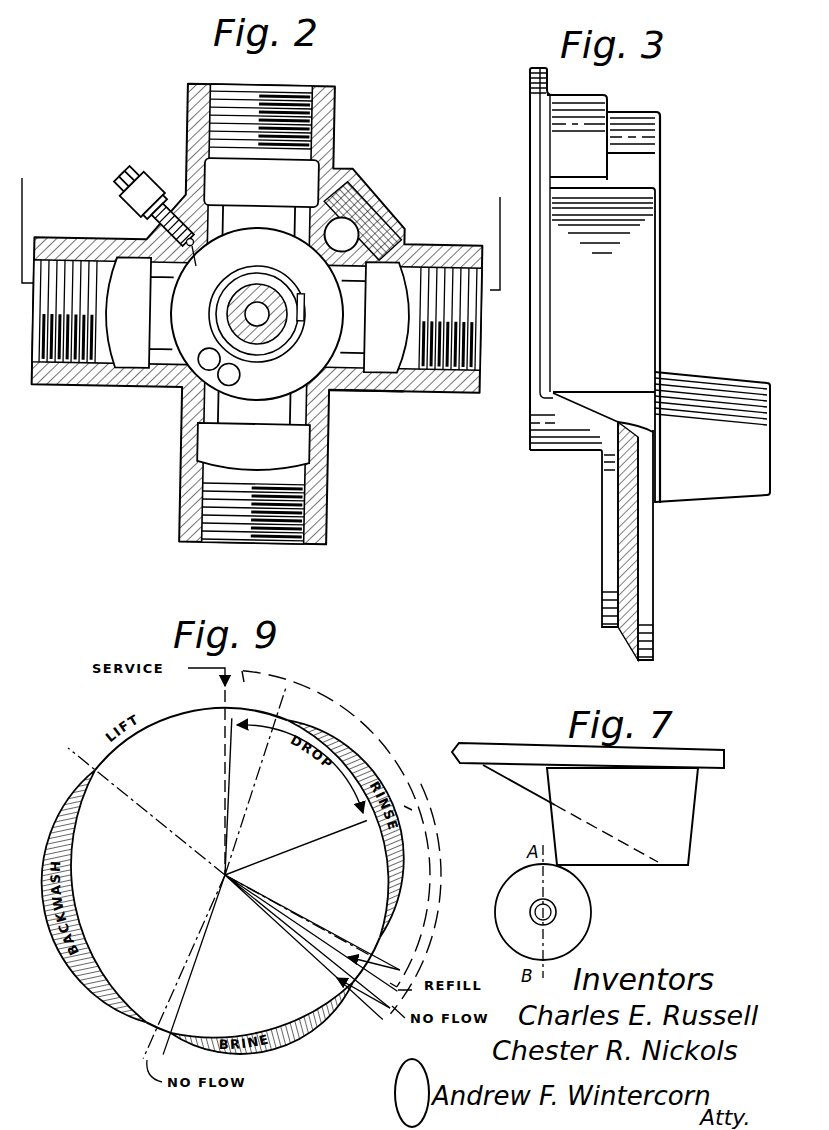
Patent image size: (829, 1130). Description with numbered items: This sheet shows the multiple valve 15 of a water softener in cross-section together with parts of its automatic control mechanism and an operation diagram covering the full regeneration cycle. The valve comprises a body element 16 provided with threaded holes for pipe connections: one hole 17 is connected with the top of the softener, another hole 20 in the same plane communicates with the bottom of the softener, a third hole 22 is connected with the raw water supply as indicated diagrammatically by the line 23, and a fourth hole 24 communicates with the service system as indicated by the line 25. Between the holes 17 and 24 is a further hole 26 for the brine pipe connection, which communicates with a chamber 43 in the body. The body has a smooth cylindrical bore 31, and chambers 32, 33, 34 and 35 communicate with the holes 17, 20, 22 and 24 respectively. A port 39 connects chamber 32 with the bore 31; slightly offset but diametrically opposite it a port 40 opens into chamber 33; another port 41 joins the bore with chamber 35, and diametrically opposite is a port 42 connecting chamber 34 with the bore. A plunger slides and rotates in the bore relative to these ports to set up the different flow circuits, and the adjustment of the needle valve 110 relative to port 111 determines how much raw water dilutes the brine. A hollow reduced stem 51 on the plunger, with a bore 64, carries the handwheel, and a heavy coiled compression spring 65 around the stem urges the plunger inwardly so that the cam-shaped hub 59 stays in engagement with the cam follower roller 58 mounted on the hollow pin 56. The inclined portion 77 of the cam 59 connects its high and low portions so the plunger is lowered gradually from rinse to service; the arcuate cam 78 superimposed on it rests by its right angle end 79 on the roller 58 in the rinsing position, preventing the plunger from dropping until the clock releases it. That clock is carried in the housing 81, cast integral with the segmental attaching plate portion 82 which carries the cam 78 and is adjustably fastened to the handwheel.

In FIG. 2, the multiple valve 15 is at (171, 394).
In FIG. 2, the body element 16 is at (336, 398).
In FIG. 2, the threaded hole 17 is at (300, 87).
In FIG. 2, the threaded hole 20 is at (290, 548).
In FIG. 2, the third hole 22 is at (60, 334).
In FIG. 2, the raw water supply line 23 is at (22, 202).
In FIG. 2, the fourth hole 24 is at (480, 306).
In FIG. 2, the service system line 25 is at (500, 224).
In FIG. 2, the brine hole 26 is at (372, 198).
In FIG. 2, the cylindrical bore 31 is at (322, 400).
In FIG. 2, the chamber 32 is at (261, 182).
In FIG. 2, the chamber 33 is at (253, 447).
In FIG. 2, the chamber 34 is at (139, 312).
In FIG. 2, the chamber 35 is at (375, 317).
In FIG. 2, the port 39 is at (278, 210).
In FIG. 2, the port 40 is at (265, 420).
In FIG. 2, the port 41 is at (346, 342).
In FIG. 2, the port 42 is at (175, 297).
In FIG. 2, the brine chamber 43 is at (341, 234).
In FIG. 2, the hollow reduced stem 51 is at (266, 270).
In FIG. 7, the hollow pin 56 is at (528, 907).
In FIG. 7, the cam follower roller 58 is at (582, 930).
In FIG. 7, the cam-shaped hub 59 is at (570, 813).
In FIG. 2, the bore of stem 64 is at (268, 348).
In FIG. 2, the coiled compression spring 65 is at (245, 272).
In FIG. 7, the inclined portion 77 is at (513, 783).
In FIG. 3, the cam 78 is at (722, 380).
In FIG. 7, the cam 78 is at (607, 870).
In FIG. 3, the right angle end 79 is at (765, 498).
In FIG. 7, the right angle end 79 is at (560, 863).
In FIG. 3, the housing 81 is at (637, 297).
In FIG. 3, the attaching plate portion 82 is at (645, 619).
In FIG. 2, the needle valve 110 is at (160, 170).
In FIG. 2, the port 111 is at (205, 265).